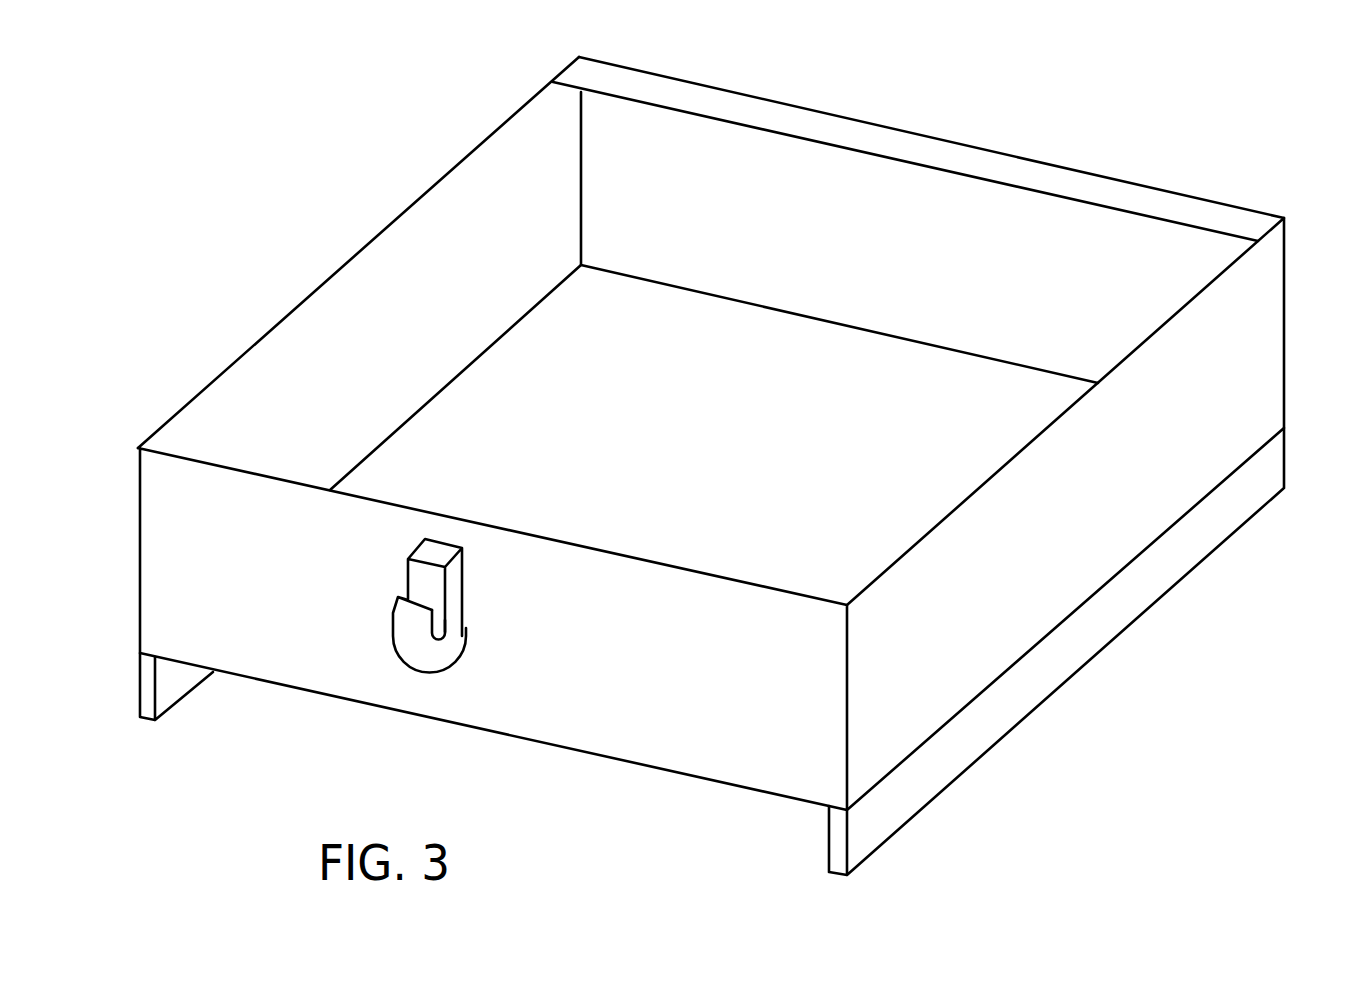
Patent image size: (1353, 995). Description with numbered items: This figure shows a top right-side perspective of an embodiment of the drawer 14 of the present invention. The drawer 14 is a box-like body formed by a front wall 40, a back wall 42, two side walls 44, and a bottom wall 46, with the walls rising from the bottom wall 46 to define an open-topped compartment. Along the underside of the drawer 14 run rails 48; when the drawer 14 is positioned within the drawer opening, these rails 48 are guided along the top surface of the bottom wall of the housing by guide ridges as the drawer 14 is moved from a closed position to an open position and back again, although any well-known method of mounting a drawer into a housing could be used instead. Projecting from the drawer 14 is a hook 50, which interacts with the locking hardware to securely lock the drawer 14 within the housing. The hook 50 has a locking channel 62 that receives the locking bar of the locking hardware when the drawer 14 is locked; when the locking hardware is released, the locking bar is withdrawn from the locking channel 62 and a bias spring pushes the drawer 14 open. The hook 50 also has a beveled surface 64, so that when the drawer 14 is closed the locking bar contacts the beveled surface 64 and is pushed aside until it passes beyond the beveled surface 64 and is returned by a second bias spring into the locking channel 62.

The drawer 14 is at (1147, 139).
The front wall 40 is at (1165, 268).
The back wall 42 is at (847, 708).
The side walls 44 is at (323, 333).
The bottom wall 46 is at (915, 480).
The rails 48 is at (146, 688).
The hook 50 is at (452, 580).
The locking channel 62 is at (438, 628).
The beveled surface 64 is at (410, 627).